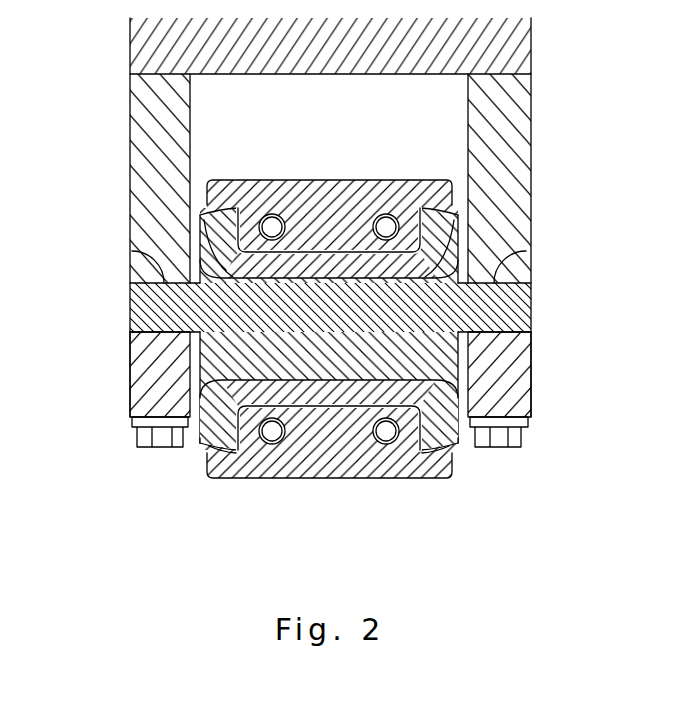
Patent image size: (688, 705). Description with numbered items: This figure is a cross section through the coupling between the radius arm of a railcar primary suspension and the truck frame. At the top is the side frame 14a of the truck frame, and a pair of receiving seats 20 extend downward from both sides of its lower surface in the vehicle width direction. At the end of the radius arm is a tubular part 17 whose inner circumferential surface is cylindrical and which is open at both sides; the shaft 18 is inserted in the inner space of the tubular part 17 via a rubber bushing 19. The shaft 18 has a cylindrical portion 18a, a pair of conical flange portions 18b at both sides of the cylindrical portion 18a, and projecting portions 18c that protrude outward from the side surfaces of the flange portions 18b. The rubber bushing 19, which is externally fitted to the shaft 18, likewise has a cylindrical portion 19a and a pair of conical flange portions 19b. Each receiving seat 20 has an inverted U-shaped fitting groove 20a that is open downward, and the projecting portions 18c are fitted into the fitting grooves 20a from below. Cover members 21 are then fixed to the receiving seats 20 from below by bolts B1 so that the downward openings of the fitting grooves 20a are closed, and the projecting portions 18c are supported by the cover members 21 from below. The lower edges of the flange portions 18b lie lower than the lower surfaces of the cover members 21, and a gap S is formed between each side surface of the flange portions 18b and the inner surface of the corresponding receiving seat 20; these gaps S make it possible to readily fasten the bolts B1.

The side frame 14a is at (520, 43).
The tubular part 17 is at (276, 195).
The shaft 18 is at (351, 307).
The cylindrical portion 18a is at (303, 373).
The conical flange portion 18b is at (198, 447).
The projecting portion 18c is at (140, 312).
The rubber bushing 19 is at (314, 262).
The cylindrical portion 19a is at (345, 396).
The conical flange portion 19b is at (222, 444).
The receiving seat 20 is at (130, 112).
The fitting groove 20a is at (158, 253).
The cover member 21 is at (130, 397).
The gap S is at (198, 374).
The bolt B1 is at (147, 448).